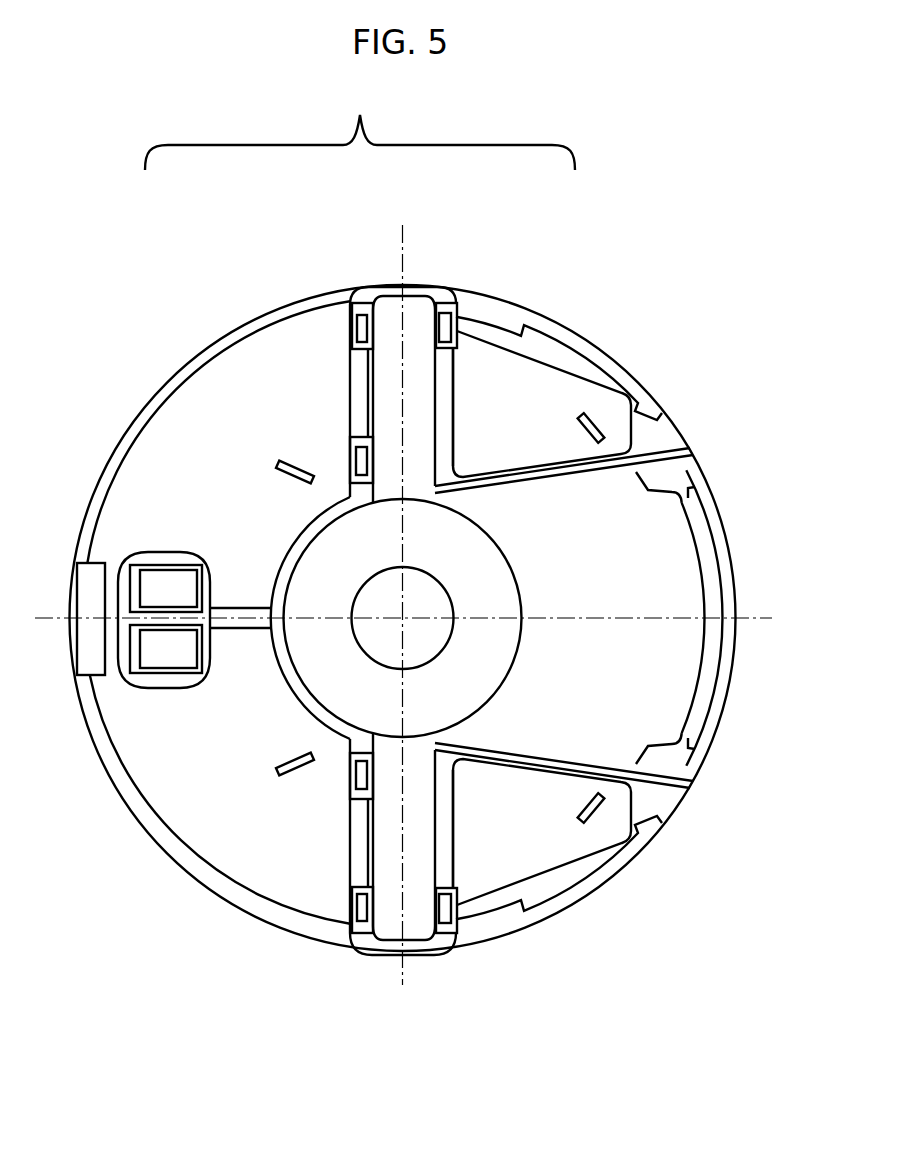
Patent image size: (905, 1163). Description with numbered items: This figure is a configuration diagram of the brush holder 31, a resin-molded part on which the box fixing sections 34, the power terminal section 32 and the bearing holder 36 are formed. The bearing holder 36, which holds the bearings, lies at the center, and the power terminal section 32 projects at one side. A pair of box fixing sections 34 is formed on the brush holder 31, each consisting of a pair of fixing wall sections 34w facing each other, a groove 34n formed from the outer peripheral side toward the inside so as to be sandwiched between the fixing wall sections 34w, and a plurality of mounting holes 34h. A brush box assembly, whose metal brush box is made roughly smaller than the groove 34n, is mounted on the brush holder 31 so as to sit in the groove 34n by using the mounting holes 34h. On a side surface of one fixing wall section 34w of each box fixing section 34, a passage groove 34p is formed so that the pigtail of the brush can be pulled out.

The brush holder 31 is at (142, 365).
The power terminal section 32 is at (137, 647).
The box fixing section 34 is at (370, 100).
The groove 34n is at (395, 342).
The fixing wall section 34w is at (360, 395).
The mounting hole 34h is at (353, 433).
The passage groove 34p is at (440, 437).
The bearing holder 36 is at (487, 633).